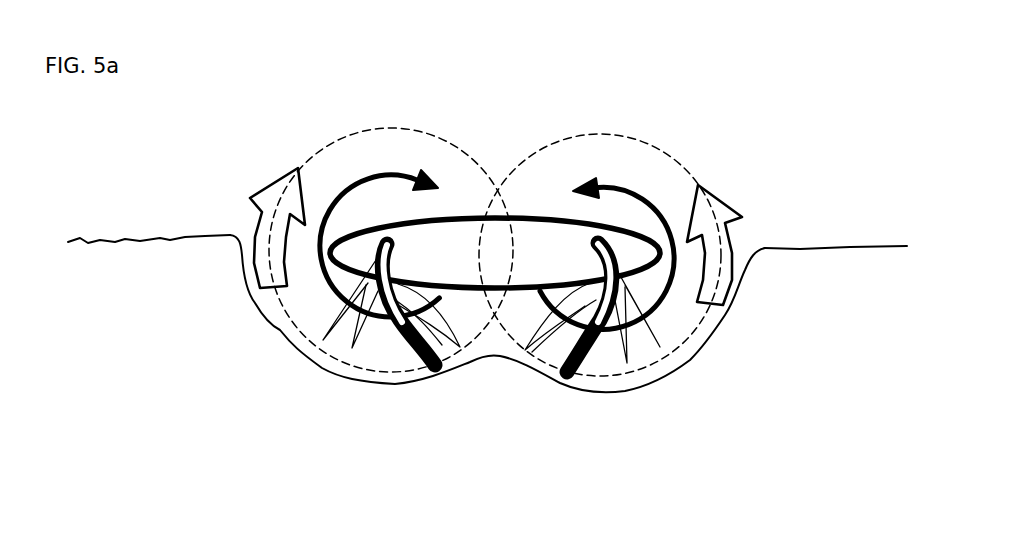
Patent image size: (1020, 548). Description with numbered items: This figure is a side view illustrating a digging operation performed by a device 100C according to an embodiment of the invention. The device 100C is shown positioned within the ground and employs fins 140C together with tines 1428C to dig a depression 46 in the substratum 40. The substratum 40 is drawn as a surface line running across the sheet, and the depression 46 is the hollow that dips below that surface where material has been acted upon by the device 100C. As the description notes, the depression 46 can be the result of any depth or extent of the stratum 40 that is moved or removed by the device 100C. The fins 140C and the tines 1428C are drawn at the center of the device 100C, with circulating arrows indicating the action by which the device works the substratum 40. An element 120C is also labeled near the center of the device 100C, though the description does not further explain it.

The substratum 40 is at (797, 253).
The depression 46 is at (491, 345).
The device 100C is at (384, 98).
The circulation ring 120C is at (455, 240).
The tines 1428C is at (662, 327).
The fins 140C is at (588, 363).